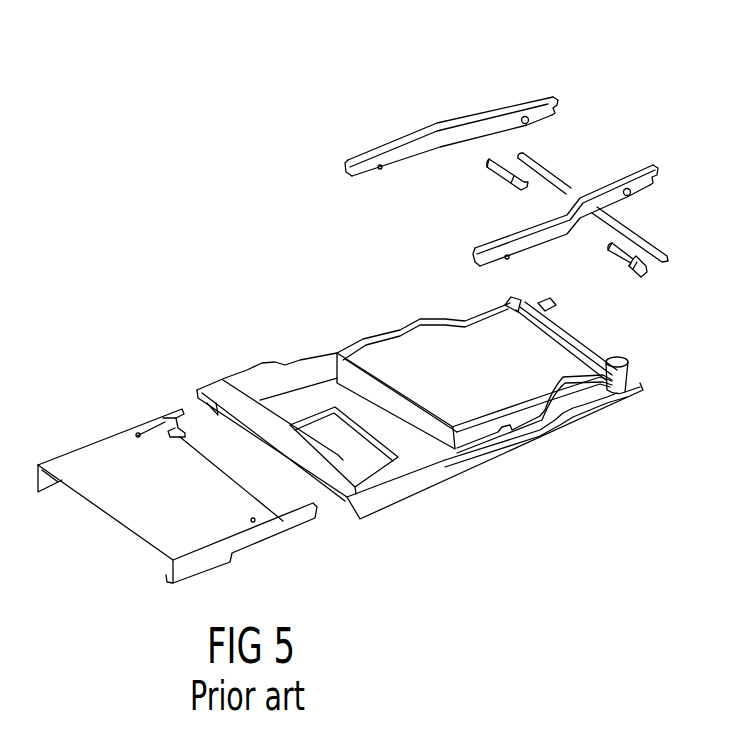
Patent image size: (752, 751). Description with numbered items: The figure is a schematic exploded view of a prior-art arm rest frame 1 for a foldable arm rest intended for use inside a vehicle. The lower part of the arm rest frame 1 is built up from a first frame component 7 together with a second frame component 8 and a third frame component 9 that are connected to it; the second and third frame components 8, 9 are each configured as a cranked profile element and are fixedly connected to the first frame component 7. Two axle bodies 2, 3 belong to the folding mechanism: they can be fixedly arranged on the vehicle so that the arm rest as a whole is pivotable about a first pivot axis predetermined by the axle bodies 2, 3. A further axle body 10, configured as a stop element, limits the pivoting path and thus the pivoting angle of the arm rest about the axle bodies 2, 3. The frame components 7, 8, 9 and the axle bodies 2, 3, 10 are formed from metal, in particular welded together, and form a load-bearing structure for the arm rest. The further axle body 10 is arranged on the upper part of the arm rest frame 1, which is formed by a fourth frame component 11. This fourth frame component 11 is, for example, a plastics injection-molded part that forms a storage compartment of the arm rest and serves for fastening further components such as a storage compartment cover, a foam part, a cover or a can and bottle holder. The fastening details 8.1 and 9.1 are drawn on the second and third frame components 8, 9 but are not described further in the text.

The arm rest frame 1 is at (212, 146).
The axle body 2 is at (503, 180).
The axle body 3 is at (640, 278).
The first frame component 7 is at (120, 467).
The second frame component 8 is at (552, 92).
The fastening bolt of first rod 8.1 is at (524, 116).
The third frame component 9 is at (655, 164).
The fastening bolt of second rod 9.1 is at (632, 194).
The further axle body 10 is at (567, 183).
The fourth frame component 11 is at (257, 381).